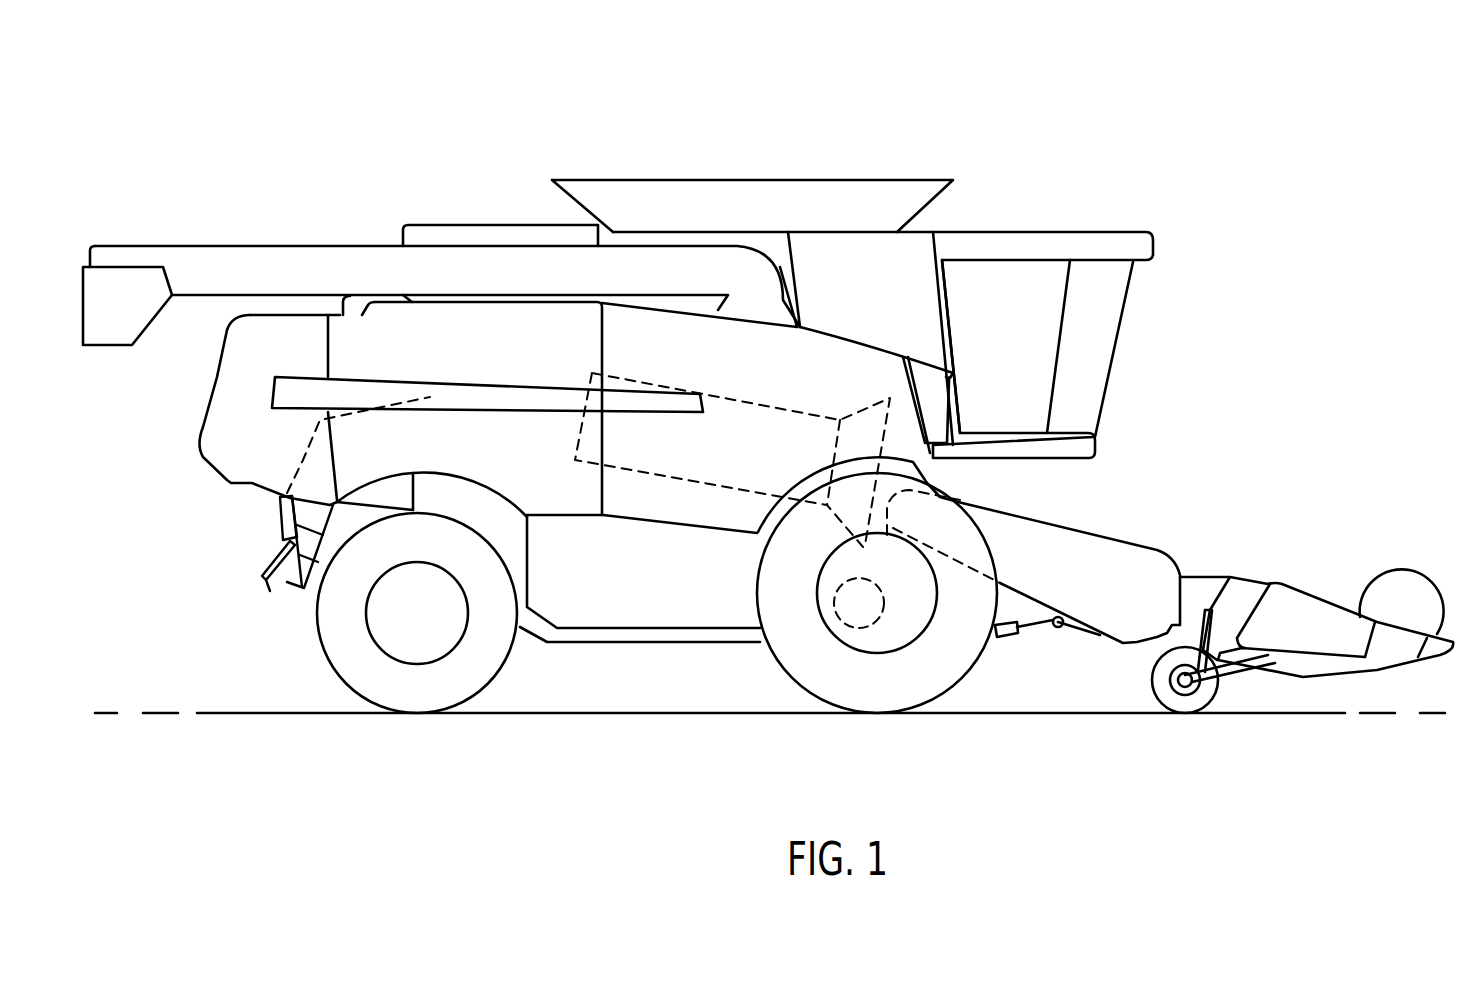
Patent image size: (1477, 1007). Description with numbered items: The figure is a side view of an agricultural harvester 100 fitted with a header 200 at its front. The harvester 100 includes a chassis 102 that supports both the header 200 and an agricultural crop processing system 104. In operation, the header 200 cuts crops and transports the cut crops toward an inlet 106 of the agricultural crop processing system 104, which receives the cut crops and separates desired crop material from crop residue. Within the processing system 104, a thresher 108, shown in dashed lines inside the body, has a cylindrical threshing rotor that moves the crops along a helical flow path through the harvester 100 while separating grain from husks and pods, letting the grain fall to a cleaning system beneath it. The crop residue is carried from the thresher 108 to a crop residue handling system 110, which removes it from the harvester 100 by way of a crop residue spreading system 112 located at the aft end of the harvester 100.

The agricultural harvester 100 is at (1160, 130).
The chassis 102 is at (572, 655).
The agricultural crop processing system 104 is at (748, 365).
The inlet 106 is at (972, 487).
The thresher 108 is at (752, 398).
The crop residue handling system 110 is at (376, 364).
The crop residue spreading system 112 is at (256, 553).
The header 200 is at (1348, 548).